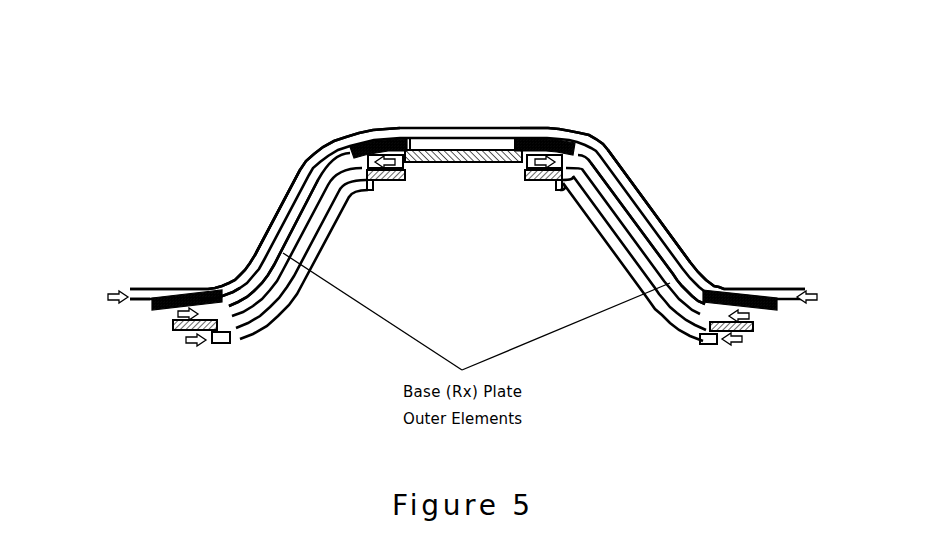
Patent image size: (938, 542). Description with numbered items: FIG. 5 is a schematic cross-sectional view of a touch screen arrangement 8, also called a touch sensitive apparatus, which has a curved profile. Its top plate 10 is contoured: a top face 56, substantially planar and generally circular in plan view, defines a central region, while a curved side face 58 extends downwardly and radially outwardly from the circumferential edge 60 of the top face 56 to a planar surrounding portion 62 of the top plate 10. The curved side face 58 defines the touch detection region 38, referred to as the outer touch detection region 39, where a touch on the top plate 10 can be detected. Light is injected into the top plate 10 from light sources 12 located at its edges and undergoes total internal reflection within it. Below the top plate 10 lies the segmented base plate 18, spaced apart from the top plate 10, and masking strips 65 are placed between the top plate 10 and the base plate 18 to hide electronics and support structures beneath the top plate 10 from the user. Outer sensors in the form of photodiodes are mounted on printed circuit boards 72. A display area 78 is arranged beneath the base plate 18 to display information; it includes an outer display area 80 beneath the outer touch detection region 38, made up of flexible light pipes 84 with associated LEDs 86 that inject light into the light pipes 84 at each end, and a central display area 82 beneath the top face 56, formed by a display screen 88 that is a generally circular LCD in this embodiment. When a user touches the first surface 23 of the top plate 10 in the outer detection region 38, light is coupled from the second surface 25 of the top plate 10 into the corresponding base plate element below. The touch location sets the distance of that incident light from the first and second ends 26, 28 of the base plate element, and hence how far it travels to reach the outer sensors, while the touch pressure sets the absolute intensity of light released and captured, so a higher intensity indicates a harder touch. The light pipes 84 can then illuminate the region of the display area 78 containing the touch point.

The touch screen arrangement 8 is at (585, 63).
The top plate 10 is at (767, 290).
The light sources 12 is at (115, 288).
The base plate 18 is at (700, 344).
The first surface 23 is at (230, 273).
The second surface 25 is at (147, 305).
The first end 26 is at (364, 186).
The second end 28 is at (222, 343).
The touch detection region 38 is at (297, 155).
The outer touch detection region 39 is at (257, 147).
The top face 56 is at (468, 123).
The curved side face 58 is at (653, 210).
The circumferential edge 60 is at (393, 238).
The surrounding portion 62 is at (133, 280).
The masking strips 65 is at (356, 141).
The printed circuit boards 72 is at (192, 332).
The display area 78 is at (467, 282).
The outer display area 80 is at (253, 343).
The central display area 82 is at (436, 170).
The light pipes 84 is at (288, 283).
The LEDs 86 is at (206, 346).
The display screen 88 is at (498, 163).